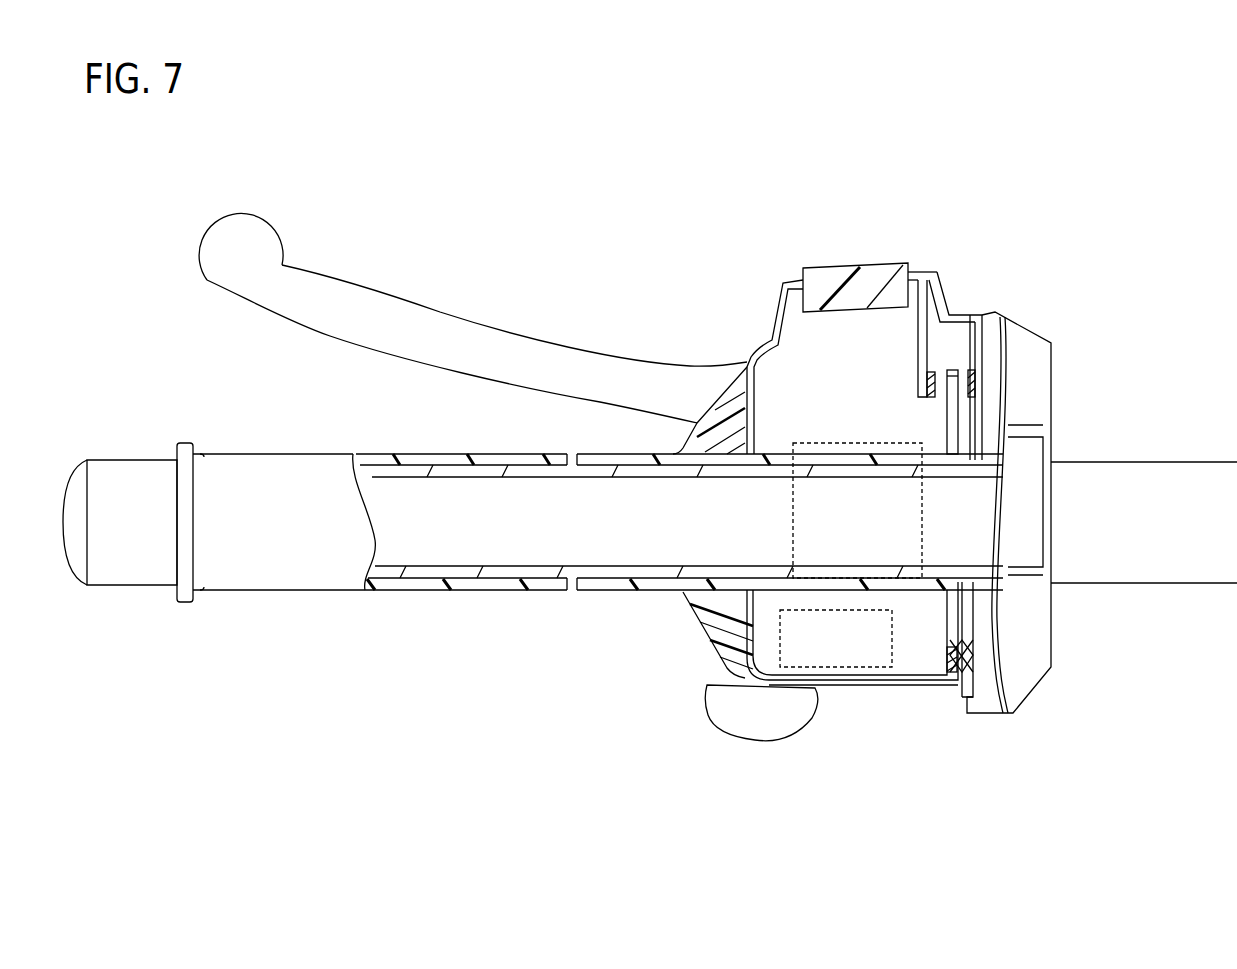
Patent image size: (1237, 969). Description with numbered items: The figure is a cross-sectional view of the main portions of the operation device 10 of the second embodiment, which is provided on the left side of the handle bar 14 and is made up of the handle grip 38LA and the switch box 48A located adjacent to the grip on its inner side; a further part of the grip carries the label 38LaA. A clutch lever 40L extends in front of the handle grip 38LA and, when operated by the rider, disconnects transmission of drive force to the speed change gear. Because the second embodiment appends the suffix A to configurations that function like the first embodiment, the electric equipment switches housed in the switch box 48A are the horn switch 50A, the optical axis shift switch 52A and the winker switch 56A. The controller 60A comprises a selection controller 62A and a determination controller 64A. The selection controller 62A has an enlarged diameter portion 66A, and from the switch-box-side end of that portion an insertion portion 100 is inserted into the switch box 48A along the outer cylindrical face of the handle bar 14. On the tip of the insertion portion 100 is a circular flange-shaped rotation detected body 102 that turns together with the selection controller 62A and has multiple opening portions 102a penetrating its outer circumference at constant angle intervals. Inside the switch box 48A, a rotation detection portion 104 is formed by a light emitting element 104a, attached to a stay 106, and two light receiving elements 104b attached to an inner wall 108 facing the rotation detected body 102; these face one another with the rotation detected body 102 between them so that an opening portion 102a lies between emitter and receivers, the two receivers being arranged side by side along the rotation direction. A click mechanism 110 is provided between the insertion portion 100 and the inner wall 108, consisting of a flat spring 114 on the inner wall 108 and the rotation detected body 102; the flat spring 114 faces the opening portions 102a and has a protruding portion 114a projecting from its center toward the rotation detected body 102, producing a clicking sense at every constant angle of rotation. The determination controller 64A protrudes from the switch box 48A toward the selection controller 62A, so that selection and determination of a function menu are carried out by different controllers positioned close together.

The operation device 10 is at (1027, 240).
The handle bar 14 is at (1130, 460).
The handle grip 38LA is at (253, 607).
The grip end portion 38LaA is at (240, 478).
The clutch lever 40L is at (300, 285).
The switch box 48A is at (1023, 343).
The horn switch 50A is at (808, 518).
The optical axis shift switch 52A is at (847, 295).
The winker switch 56A is at (837, 676).
The controller 60A is at (685, 666).
The selection controller 62A is at (632, 592).
The determination controller 64A is at (703, 700).
The enlarged diameter portion 66A is at (727, 408).
The insertion portion 100 is at (830, 447).
The rotation detected body 102 is at (950, 405).
The opening portions 102a is at (928, 380).
The rotation detection portion 104 is at (951, 317).
The light emitting element 104a is at (933, 370).
The light receiving elements 104b is at (971, 370).
The stay 106 is at (918, 343).
The inner wall 108 is at (988, 372).
The click mechanism 110 is at (947, 678).
The flat spring 114 is at (975, 652).
The protruding portion 114a is at (947, 655).